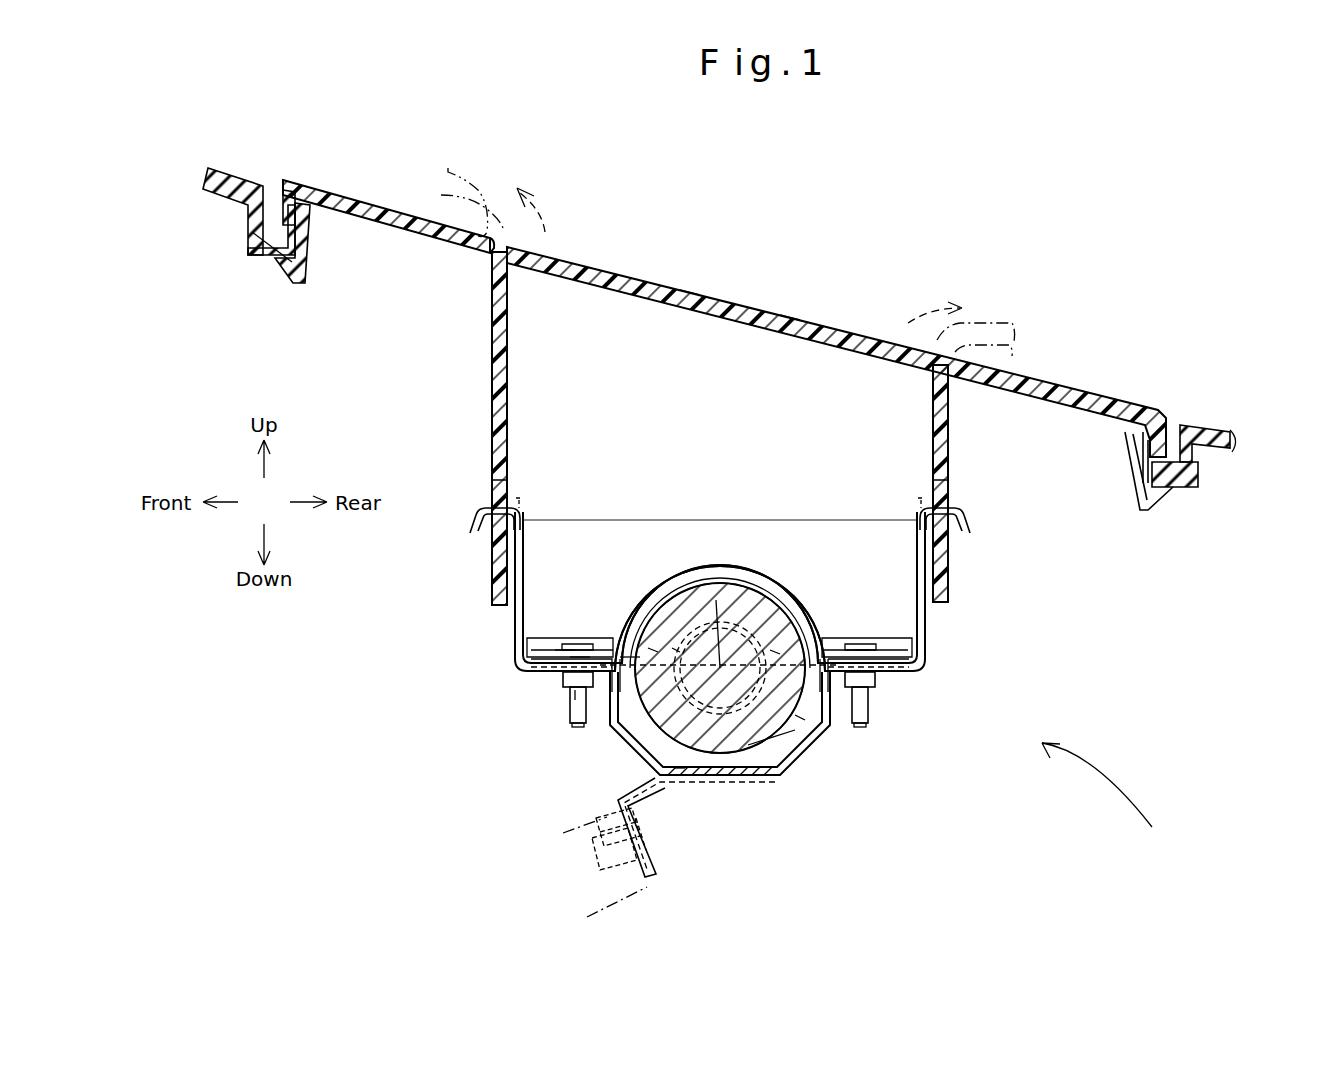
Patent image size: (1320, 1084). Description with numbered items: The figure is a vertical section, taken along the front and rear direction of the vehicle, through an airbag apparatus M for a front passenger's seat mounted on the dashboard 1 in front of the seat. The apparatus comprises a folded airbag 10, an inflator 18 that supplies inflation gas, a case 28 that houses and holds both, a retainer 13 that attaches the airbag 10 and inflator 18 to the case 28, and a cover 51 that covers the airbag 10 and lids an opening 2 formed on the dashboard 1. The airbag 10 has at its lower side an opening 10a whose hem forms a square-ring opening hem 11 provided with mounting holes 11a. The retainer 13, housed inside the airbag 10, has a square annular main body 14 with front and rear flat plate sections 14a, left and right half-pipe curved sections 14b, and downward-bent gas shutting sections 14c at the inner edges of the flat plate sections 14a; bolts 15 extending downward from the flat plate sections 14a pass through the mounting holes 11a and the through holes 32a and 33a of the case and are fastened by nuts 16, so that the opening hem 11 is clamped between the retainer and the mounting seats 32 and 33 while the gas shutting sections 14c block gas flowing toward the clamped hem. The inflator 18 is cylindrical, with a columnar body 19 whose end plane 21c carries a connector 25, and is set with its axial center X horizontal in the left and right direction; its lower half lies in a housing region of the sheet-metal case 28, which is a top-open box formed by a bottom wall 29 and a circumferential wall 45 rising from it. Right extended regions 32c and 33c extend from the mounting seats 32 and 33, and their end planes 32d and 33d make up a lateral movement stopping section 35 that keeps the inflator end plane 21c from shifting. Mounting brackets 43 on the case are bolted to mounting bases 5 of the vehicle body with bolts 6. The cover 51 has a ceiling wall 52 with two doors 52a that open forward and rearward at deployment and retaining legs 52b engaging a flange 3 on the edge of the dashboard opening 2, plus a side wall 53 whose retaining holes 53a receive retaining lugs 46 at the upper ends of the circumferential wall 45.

The dashboard 1 is at (238, 187).
The opening 2 is at (283, 200).
The flange 3 is at (258, 245).
The mounting base 5 is at (592, 832).
The bolt 6 is at (645, 838).
The airbag 10 is at (720, 533).
The opening 10a is at (622, 657).
The opening hem 11 is at (560, 650).
The mounting hole 11a is at (576, 650).
The retainer 13 is at (727, 582).
The main body 14 is at (727, 582).
The flat plate section 14a is at (840, 650).
The curved section 14b is at (735, 580).
The gas shutting section 14c is at (618, 735).
The bolt 15 is at (568, 715).
The nut 16 is at (566, 682).
The inflator 18 is at (806, 800).
The body 19 is at (790, 732).
The end plane 21c is at (650, 648).
The connector 25 is at (780, 775).
The case 28 is at (623, 648).
The bottom wall 29 is at (540, 676).
The mounting seat 32 is at (570, 741).
The through hole 32a is at (578, 700).
The right extended region 32c is at (680, 778).
The end plane 32d is at (676, 650).
The mounting seat 33 is at (906, 672).
The through hole 33a is at (860, 650).
The right extended region 33c is at (797, 707).
The end plane 33d is at (776, 650).
The lateral movement stopping section 35 is at (729, 556).
The mounting bracket 43 is at (690, 790).
The circumferential wall 45 is at (520, 617).
The retaining lug 46 is at (480, 522).
The cover 51 is at (759, 405).
The ceiling wall 52 is at (759, 405).
The door 52a is at (690, 290).
The retaining leg 52b is at (1168, 495).
The side wall 53 is at (727, 428).
The retaining hole 53a is at (497, 490).
The airbag apparatus M is at (1110, 794).
The axial center X is at (716, 600).